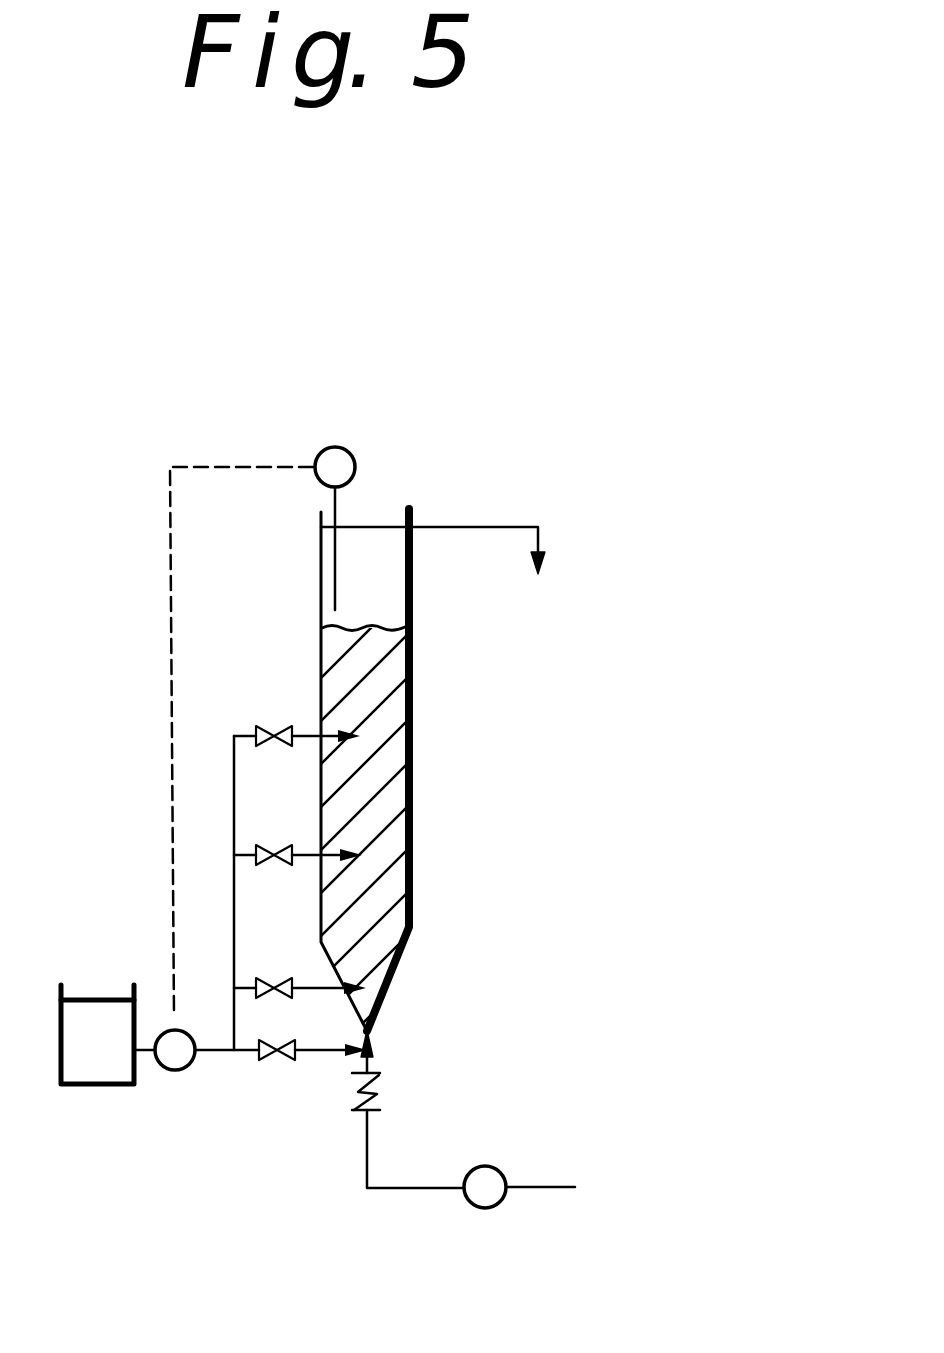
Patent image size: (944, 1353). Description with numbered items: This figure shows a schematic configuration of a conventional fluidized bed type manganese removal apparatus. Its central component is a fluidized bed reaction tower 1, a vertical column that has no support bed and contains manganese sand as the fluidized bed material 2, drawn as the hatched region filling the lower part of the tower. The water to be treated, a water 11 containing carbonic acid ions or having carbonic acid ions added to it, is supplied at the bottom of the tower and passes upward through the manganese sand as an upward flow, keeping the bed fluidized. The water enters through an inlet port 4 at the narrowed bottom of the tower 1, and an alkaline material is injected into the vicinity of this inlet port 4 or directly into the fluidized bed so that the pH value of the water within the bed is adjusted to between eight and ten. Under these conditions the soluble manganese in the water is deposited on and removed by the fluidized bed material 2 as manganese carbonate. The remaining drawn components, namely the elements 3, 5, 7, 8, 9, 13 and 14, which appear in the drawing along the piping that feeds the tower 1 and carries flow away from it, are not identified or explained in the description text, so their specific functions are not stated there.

The fluidized bed reaction tower 1 is at (413, 653).
The fluidized bed material 2 is at (390, 742).
The discharge pump 3 is at (502, 1166).
The inlet port 4 is at (373, 1027).
The discharge pipe 5 is at (375, 1085).
The feed pump 7 is at (178, 1070).
The valves 8 is at (350, 732).
The level sensor 9 is at (352, 457).
The water containing carbonic acid ions 11 is at (557, 1187).
The overflow line 13 is at (470, 527).
The feed manifold line 14 is at (210, 1047).